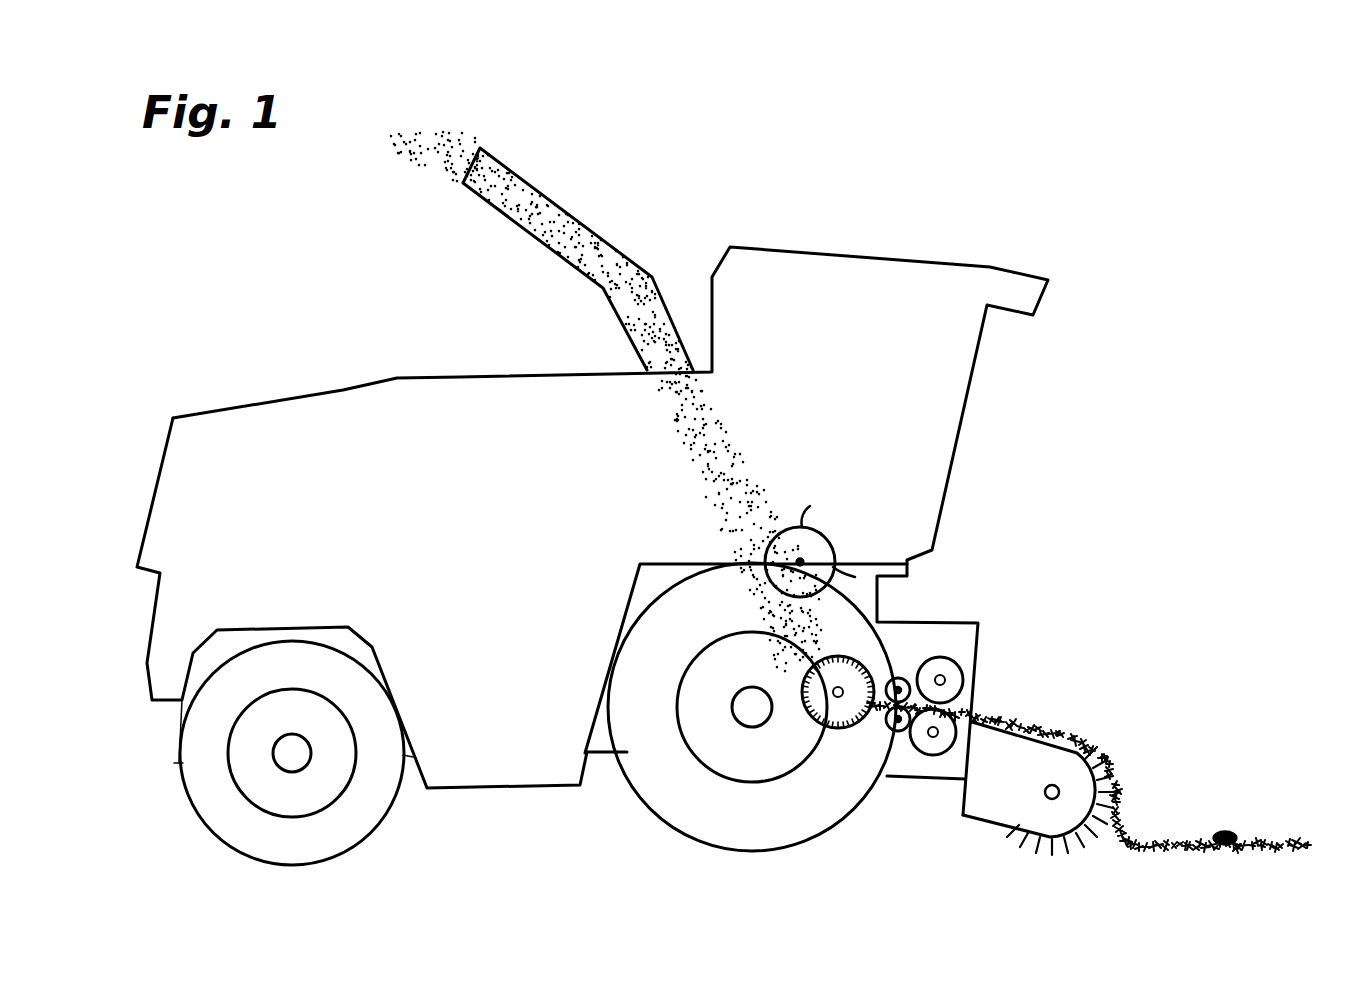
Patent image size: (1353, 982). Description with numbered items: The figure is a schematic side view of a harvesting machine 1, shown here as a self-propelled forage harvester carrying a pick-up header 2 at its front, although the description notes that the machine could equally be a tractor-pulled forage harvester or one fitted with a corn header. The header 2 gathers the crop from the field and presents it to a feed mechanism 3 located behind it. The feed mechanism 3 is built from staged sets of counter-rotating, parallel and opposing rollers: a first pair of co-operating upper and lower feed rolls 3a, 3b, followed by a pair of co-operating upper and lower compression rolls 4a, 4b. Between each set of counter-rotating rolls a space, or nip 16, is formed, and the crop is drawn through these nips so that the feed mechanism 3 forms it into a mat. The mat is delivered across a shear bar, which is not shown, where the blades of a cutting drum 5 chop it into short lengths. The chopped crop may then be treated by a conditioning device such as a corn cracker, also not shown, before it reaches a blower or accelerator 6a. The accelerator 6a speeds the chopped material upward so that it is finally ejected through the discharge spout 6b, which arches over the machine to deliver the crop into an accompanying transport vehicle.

The harvesting machine 1 is at (882, 103).
The header 2 is at (1128, 690).
The feed mechanism 3 is at (1063, 643).
The upper feed roll 3a is at (966, 660).
The lower feed roll 3b is at (938, 755).
The upper compression roll 4a is at (903, 670).
The lower compression roll 4b is at (893, 727).
The cutting drum 5 is at (863, 653).
The blower or accelerator 6a is at (822, 530).
The discharge spout 6b is at (547, 180).
The nip 16 is at (963, 697).